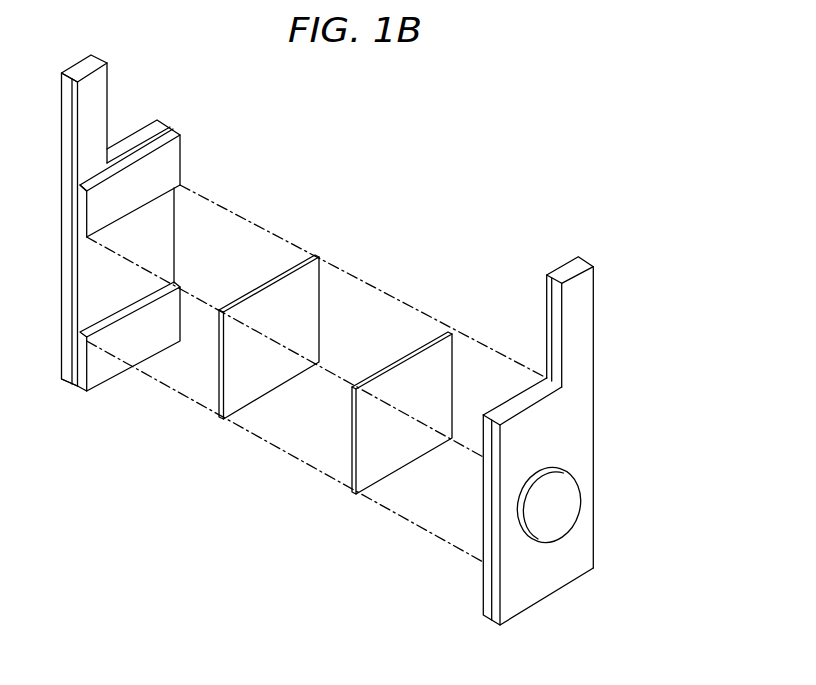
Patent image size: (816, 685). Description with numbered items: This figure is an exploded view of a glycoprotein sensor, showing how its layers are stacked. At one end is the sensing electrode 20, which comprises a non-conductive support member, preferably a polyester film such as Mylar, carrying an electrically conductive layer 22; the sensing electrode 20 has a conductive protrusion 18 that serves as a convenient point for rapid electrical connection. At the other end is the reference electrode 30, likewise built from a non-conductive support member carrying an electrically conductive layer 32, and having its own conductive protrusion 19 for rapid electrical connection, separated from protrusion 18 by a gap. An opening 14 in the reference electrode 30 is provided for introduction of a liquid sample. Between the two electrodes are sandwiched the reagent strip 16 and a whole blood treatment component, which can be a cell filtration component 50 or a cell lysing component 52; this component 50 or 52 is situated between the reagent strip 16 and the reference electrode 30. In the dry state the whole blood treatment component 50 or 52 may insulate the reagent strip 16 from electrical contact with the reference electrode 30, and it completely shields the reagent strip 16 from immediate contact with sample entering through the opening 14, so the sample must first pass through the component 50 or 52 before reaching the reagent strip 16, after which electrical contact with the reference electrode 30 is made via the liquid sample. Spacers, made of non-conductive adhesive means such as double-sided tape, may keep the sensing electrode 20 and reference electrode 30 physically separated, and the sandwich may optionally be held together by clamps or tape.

The opening 14 is at (556, 492).
The reagent strip 16 is at (301, 280).
The conductive protrusion 18 is at (68, 150).
The conductive protrusion 19 is at (560, 337).
The sensing electrode 20 is at (118, 238).
The electrically conductive layer 22 is at (97, 277).
The reference electrode 30 is at (599, 423).
The electrically conductive layer 32 is at (568, 265).
The cell filtration component 50 is at (406, 375).
The cell lysing component 52 is at (417, 345).